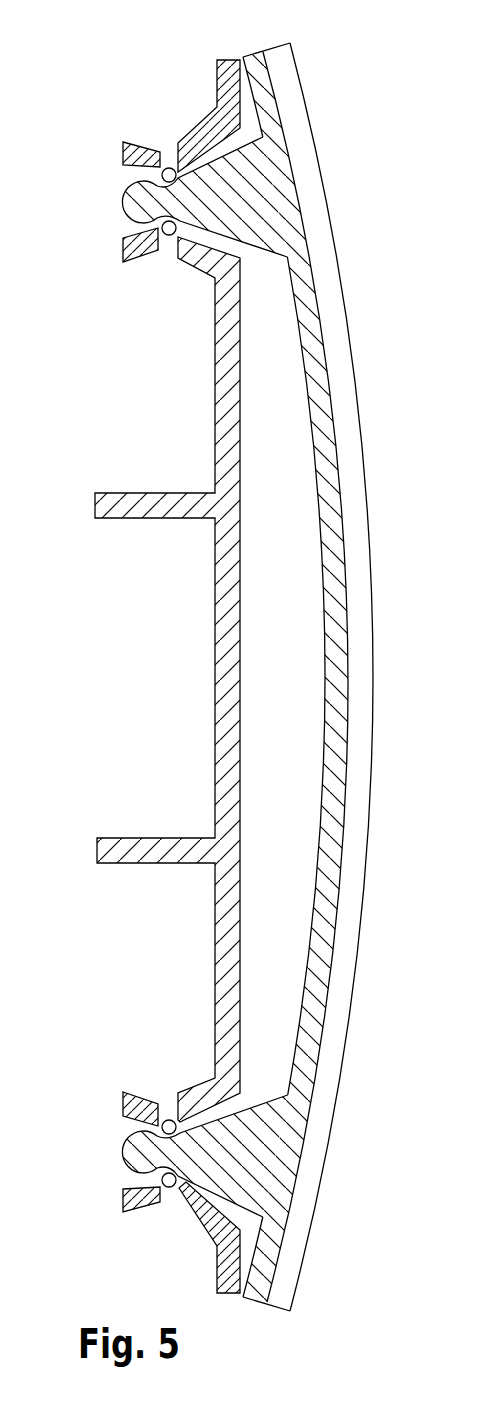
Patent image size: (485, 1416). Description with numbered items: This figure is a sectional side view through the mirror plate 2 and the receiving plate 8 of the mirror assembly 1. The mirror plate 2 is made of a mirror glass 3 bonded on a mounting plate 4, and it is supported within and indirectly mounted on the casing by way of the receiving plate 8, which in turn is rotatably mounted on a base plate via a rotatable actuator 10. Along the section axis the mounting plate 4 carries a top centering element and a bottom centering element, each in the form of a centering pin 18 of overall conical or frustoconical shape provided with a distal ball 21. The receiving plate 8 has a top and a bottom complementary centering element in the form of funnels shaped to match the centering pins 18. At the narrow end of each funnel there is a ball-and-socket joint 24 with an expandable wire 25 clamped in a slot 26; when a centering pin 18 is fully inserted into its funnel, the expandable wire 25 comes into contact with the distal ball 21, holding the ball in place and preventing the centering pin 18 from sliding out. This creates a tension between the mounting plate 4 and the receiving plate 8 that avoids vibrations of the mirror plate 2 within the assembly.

The mirror assembly 1 is at (479, 1191).
The mirror plate 2 is at (336, 655).
The mirror glass 3 is at (362, 637).
The mounting plate 4 is at (333, 730).
The receiving plate 8 is at (230, 953).
The rotatable actuator 10 is at (134, 676).
The centering pin 18 is at (207, 677).
The distal ball 21 is at (140, 202).
The ball-and-socket joint 24 is at (153, 132).
The expandable wire 25 is at (167, 166).
The slot 26 is at (170, 238).